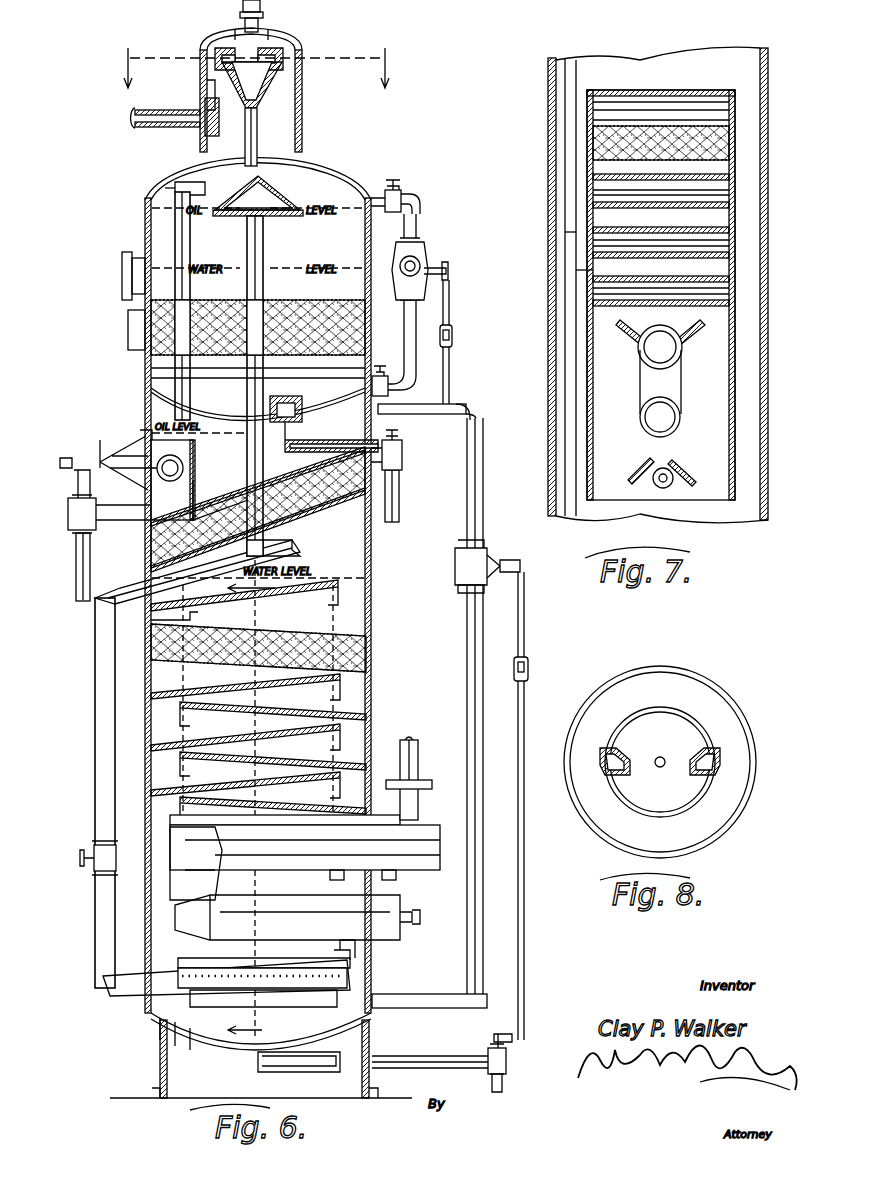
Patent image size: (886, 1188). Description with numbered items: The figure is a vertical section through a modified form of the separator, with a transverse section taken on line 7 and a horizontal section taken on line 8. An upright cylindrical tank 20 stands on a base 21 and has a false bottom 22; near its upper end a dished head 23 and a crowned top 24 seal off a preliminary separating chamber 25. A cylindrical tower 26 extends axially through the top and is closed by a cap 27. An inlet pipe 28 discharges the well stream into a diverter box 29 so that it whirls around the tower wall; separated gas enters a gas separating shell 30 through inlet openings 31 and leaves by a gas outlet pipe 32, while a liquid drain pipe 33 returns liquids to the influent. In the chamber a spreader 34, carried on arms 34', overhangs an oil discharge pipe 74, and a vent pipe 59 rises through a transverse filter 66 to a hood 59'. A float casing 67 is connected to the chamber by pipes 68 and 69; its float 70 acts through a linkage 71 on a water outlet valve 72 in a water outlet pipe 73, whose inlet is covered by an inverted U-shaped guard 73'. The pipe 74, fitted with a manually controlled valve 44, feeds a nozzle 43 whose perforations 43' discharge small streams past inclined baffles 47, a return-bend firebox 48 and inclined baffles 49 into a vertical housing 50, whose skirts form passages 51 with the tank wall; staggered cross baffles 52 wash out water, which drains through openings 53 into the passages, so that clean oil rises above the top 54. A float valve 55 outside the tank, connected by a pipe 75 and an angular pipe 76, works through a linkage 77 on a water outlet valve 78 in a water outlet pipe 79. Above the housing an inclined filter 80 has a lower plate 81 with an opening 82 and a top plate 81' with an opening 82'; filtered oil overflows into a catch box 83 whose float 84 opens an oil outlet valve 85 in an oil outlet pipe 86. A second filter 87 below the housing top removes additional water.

In FIG. 6, the section line 7— 7 is at (237, 809).
In FIG. 6, the section line 8— 8 is at (251, 68).
In FIG. 6, the upright cylindrical tank 20 is at (372, 555).
In FIG. 7, the upright cylindrical tank 20 is at (548, 104).
In FIG. 6, the base 21 is at (160, 1080).
In FIG. 6, the false bottom 22 is at (175, 1050).
In FIG. 6, the dished head 23 is at (148, 416).
In FIG. 6, the crowned top 24 is at (340, 160).
In FIG. 6, the preliminary separating chamber 25 is at (120, 276).
In FIG. 6, the cylindrical tower 26 is at (303, 112).
In FIG. 8, the cylindrical tower 26 is at (684, 668).
In FIG. 6, the cap 27 is at (230, 30).
In FIG. 6, the inlet pipe 28 is at (140, 128).
In FIG. 6, the diverter box 29 is at (205, 78).
In FIG. 6, the gas separating shell 30 is at (300, 88).
In FIG. 8, the gas separating shell 30 is at (680, 712).
In FIG. 6, the inlet openings 31 is at (300, 64).
In FIG. 8, the inlet openings 31 is at (600, 762).
In FIG. 6, the gas outlet pipe 32 is at (262, 20).
In FIG. 6, the liquid drain pipe 33 is at (258, 130).
In FIG. 6, the spreader 34 is at (267, 187).
In FIG. 6, the arms 34' is at (266, 227).
In FIG. 6, the nozzle 43 is at (226, 987).
In FIG. 7, the nozzle 43 is at (686, 484).
In FIG. 6, the perforations 43' is at (378, 966).
In FIG. 7, the perforations 43' is at (690, 455).
In FIG. 6, the manually controlled valve 44 is at (92, 870).
In FIG. 6, the inclined baffles 47 is at (308, 975).
In FIG. 7, the inclined baffles 47 is at (634, 462).
In FIG. 6, the return-bend firebox 48 is at (410, 876).
In FIG. 7, the return-bend firebox 48 is at (644, 370).
In FIG. 6, the inclined baffles 49 is at (282, 826).
In FIG. 7, the inclined baffles 49 is at (618, 330).
In FIG. 6, the vertical housing 50 is at (196, 672).
In FIG. 7, the vertical housing 50 is at (590, 268).
In FIG. 7, the vertical passages 51 is at (558, 232).
In FIG. 6, the staggered cross baffles 52 is at (372, 704).
In FIG. 7, the staggered cross baffles 52 is at (664, 228).
In FIG. 6, the water draining openings 53 is at (318, 756).
In FIG. 7, the top of the housing 54 is at (690, 88).
In FIG. 6, the float valve 55 is at (490, 548).
In FIG. 6, the vent pipe 59 is at (140, 306).
In FIG. 6, the hood 59' is at (161, 172).
In FIG. 6, the transverse filter 66 is at (306, 300).
In FIG. 6, the float casing 67 is at (424, 248).
In FIG. 6, the pipe 68 is at (408, 194).
In FIG. 6, the pipe 69 is at (412, 380).
In FIG. 6, the float 70 is at (446, 274).
In FIG. 6, the linkage 71 is at (452, 312).
In FIG. 6, the water outlet valve 72 is at (403, 440).
In FIG. 6, the water outlet pipe 73 is at (324, 448).
In FIG. 6, the inverted U-shaped guard 73' is at (258, 404).
In FIG. 6, the oil discharge pipe 74 is at (246, 240).
In FIG. 6, the pipe 75 is at (476, 492).
In FIG. 6, the angular pipe 76 is at (408, 1010).
In FIG. 6, the linkage 77 is at (525, 928).
In FIG. 6, the water outlet valve 78 is at (508, 1058).
In FIG. 6, the water outlet pipe 79 is at (320, 1072).
In FIG. 6, the transverse filter 80 is at (272, 556).
In FIG. 6, the lower plate 81 is at (258, 509).
In FIG. 6, the top plate 81' is at (220, 500).
In FIG. 6, the opening 82 is at (231, 512).
In FIG. 6, the opening 82' is at (412, 489).
In FIG. 6, the catch box 83 is at (196, 450).
In FIG. 6, the float 84 is at (162, 476).
In FIG. 6, the oil outlet valve 85 is at (66, 508).
In FIG. 6, the oil outlet pipe 86 is at (94, 527).
In FIG. 6, the second filter 87 is at (372, 650).
In FIG. 7, the second filter 87 is at (600, 144).